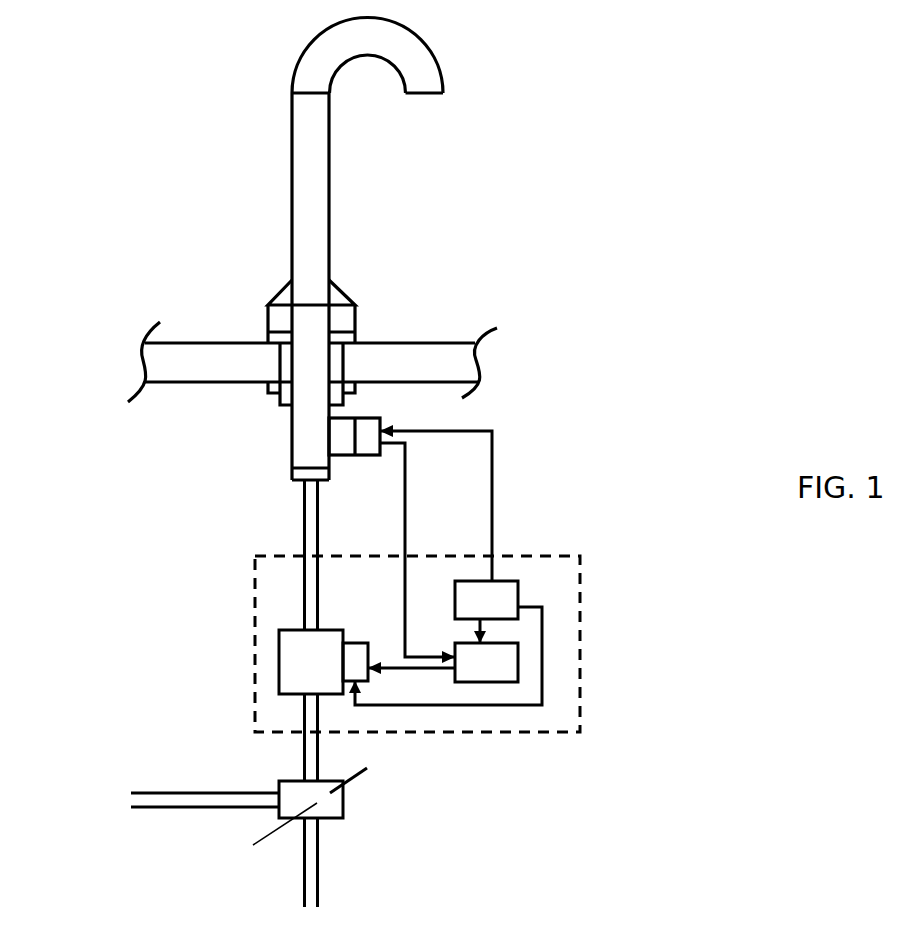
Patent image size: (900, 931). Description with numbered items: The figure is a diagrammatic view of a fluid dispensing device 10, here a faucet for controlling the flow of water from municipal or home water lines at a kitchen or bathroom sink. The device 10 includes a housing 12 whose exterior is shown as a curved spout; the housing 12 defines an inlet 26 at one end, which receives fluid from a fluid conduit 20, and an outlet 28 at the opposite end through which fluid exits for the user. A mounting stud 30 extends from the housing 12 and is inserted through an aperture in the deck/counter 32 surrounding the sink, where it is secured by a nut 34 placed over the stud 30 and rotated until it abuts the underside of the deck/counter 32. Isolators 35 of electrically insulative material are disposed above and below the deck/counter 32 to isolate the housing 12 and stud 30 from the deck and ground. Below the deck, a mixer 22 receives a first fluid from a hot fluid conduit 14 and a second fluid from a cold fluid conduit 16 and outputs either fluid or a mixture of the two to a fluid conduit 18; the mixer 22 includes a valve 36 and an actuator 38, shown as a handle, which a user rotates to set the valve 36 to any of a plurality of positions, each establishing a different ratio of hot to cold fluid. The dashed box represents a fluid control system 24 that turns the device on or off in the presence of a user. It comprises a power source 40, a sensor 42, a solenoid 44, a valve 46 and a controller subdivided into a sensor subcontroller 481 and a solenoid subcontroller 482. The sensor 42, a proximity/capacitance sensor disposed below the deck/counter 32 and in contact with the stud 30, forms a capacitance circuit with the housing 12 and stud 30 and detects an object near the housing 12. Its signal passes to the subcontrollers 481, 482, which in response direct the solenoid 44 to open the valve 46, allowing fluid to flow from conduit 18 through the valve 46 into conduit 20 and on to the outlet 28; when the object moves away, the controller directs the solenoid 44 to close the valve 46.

The fluid dispensing device 10 is at (174, 118).
The housing 12 is at (430, 67).
The outlet 28 is at (430, 95).
The mounting stud 30 is at (303, 418).
The isolators 35 is at (277, 383).
The nut 34 is at (277, 407).
The deck/counter 32 is at (432, 342).
The sensor 42 is at (343, 432).
The sensor subcontroller 481 is at (368, 430).
The inlet 26 is at (290, 483).
The fluid conduit 20 is at (303, 532).
The fluid control system 24 is at (590, 586).
The power source 40 is at (493, 593).
The solenoid subcontroller 482 is at (493, 668).
The valve 46 is at (293, 668).
The solenoid 44 is at (355, 657).
The fluid conduit 18 is at (313, 745).
The mixer 22 is at (365, 812).
The actuator 38 is at (367, 769).
The valve 36 is at (269, 843).
The hot fluid conduit 14 is at (178, 793).
The cold fluid conduit 16 is at (318, 882).